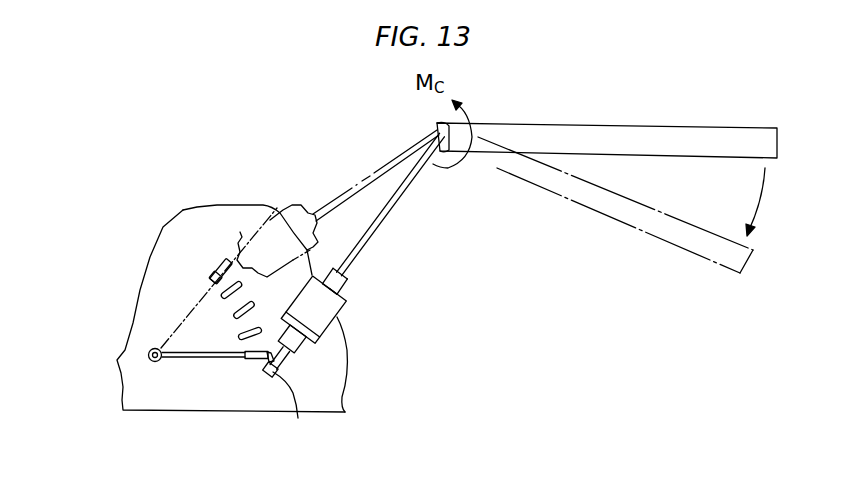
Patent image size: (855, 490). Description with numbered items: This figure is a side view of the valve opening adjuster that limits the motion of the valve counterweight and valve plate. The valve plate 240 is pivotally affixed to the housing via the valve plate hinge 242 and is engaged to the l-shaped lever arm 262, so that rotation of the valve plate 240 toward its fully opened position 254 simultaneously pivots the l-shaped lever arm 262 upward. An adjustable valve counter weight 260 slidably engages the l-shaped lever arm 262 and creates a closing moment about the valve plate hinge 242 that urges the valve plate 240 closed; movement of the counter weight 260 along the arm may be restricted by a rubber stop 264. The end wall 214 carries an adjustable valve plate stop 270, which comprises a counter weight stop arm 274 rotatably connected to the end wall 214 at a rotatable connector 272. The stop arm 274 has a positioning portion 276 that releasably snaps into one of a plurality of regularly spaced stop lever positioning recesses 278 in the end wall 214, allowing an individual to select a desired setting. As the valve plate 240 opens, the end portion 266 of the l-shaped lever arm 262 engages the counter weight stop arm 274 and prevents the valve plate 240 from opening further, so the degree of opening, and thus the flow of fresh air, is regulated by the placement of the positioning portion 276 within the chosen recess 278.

The end wall 214 is at (322, 387).
The valve plate 240 is at (638, 131).
The valve plate hinge 242 is at (438, 125).
The fully opened position 254 is at (709, 260).
The adjustable valve counter weight 260 is at (335, 306).
The l-shaped lever arm 262 is at (386, 210).
The rubber stop 264 is at (300, 363).
The end portion 266 is at (277, 374).
The adjustable valve plate stop 270 is at (154, 341).
The rotatable connector 272 is at (149, 358).
The counter weight stop arm 274 is at (217, 360).
The positioning portion 276 is at (245, 360).
The stop lever positioning recess 278 is at (203, 290).